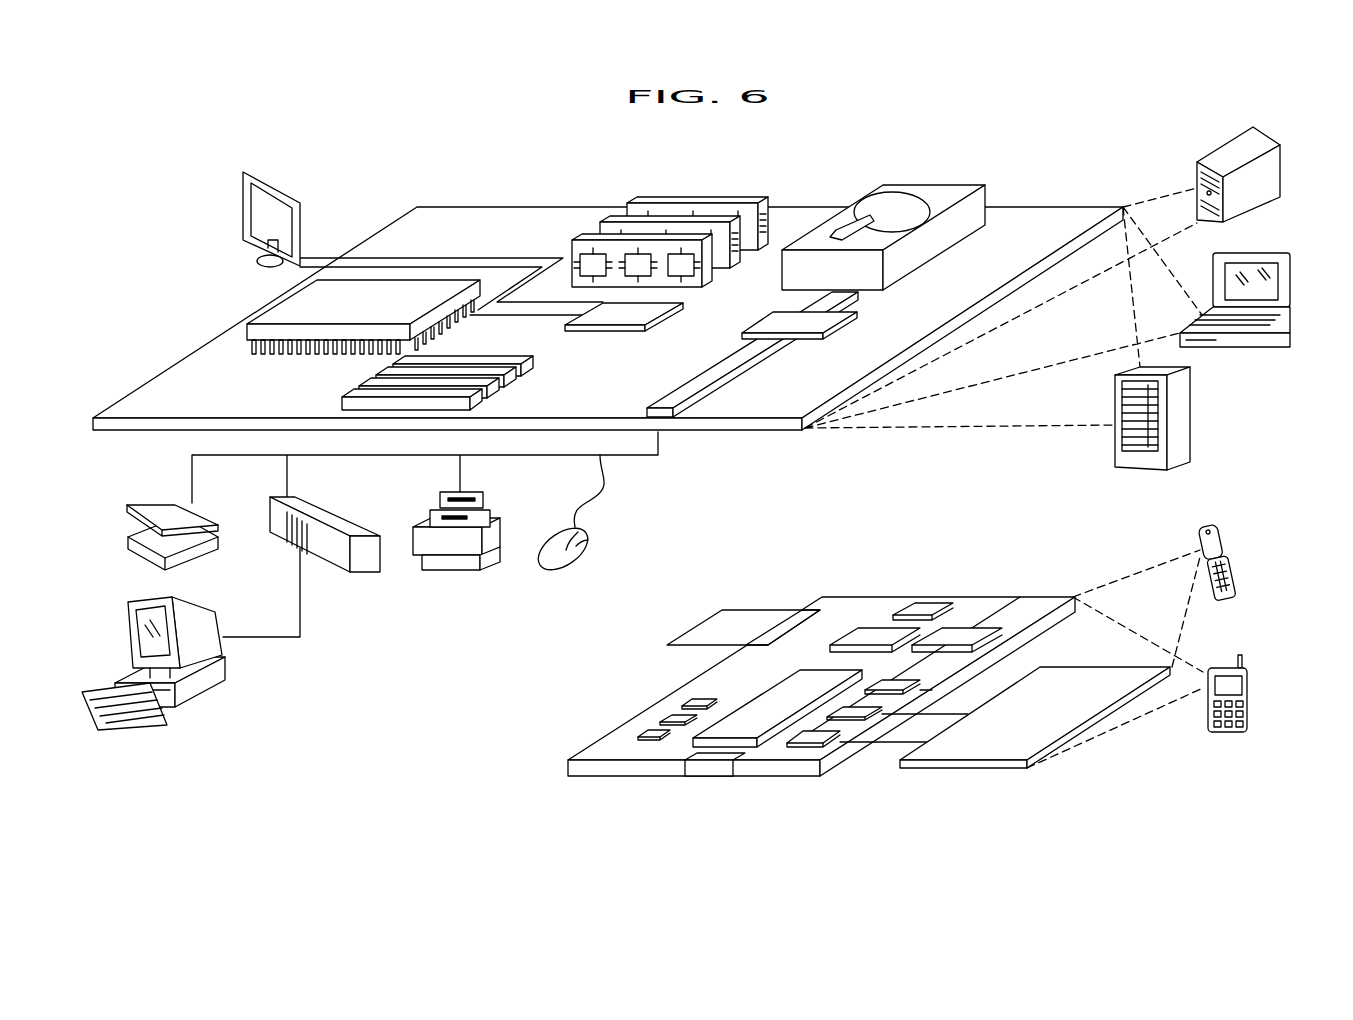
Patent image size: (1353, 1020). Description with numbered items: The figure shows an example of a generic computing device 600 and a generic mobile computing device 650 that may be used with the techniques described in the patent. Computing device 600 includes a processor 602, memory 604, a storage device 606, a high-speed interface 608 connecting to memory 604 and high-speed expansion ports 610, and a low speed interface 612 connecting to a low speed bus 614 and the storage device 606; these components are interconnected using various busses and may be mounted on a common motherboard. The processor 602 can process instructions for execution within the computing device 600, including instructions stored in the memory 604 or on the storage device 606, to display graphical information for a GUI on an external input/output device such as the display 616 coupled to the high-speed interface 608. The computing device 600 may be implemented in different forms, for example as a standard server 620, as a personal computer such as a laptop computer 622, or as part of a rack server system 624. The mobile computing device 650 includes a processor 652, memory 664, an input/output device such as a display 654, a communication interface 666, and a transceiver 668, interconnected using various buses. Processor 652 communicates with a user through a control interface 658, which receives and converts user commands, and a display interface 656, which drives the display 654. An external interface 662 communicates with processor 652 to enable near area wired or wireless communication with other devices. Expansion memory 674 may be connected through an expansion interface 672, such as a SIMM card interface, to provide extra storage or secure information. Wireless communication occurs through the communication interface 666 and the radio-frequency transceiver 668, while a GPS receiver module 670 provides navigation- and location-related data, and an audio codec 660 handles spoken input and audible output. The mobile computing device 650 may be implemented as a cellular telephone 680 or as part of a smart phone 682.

The computing device 600 is at (370, 154).
The processor 602 is at (272, 310).
The memory 604 is at (705, 203).
The storage device 606 is at (928, 188).
The high-speed interface 608 is at (636, 313).
The high-speed expansion ports 610 is at (368, 384).
The low speed interface 612 is at (777, 318).
The low speed bus 614 is at (667, 404).
The display 616 is at (246, 178).
The standard server 620 is at (1215, 158).
The laptop computer 622 is at (1267, 253).
The rack server system 624 is at (1192, 420).
The mobile computing device 650 is at (522, 786).
The processor 652 is at (746, 713).
The display 654 is at (1073, 686).
The display interface 656 is at (820, 737).
The control interface 658 is at (858, 712).
The audio codec 660 is at (888, 682).
The external interface 662 is at (710, 763).
The memory 664 is at (665, 722).
The communication interface 666 is at (876, 628).
The transceiver 668 is at (962, 628).
The GPS receiver module 670 is at (922, 603).
The expansion interface 672 is at (800, 610).
The expansion memory 674 is at (723, 610).
The cellular telephone 680 is at (1208, 525).
The smart phone 682 is at (1222, 668).